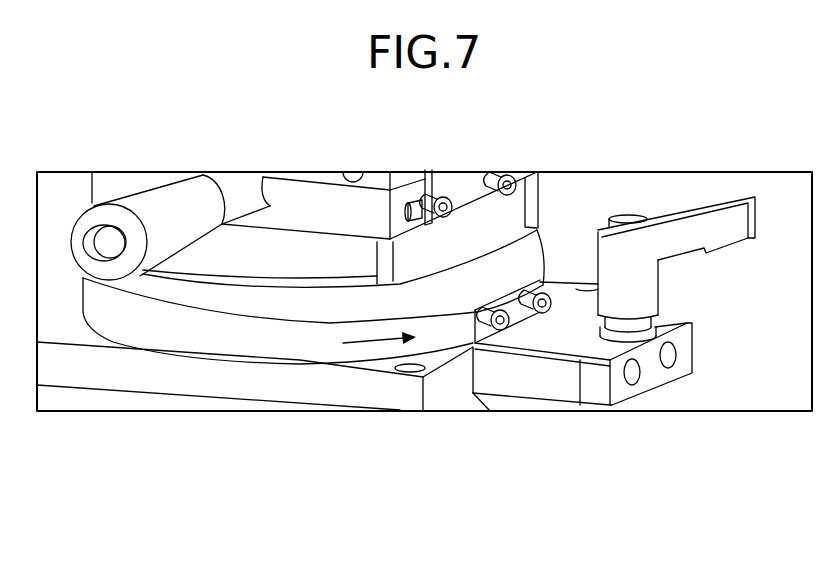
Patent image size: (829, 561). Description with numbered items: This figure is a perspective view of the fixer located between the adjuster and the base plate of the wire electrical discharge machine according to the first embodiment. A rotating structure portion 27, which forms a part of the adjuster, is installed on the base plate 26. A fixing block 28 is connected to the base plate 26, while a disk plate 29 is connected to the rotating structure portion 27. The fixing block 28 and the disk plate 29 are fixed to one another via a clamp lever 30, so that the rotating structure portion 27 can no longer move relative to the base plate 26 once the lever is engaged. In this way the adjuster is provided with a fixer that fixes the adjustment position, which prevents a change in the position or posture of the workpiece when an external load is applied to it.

The base plate 26 is at (288, 388).
The rotating structure portion 27 is at (234, 340).
The fixing block 28 is at (622, 388).
The disk plate 29 is at (553, 328).
The clamp lever 30 is at (722, 228).